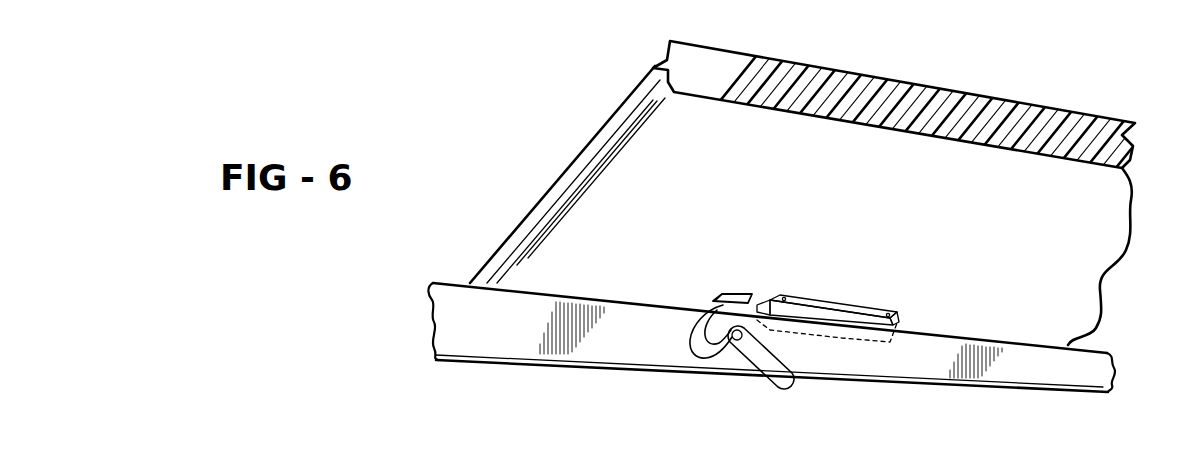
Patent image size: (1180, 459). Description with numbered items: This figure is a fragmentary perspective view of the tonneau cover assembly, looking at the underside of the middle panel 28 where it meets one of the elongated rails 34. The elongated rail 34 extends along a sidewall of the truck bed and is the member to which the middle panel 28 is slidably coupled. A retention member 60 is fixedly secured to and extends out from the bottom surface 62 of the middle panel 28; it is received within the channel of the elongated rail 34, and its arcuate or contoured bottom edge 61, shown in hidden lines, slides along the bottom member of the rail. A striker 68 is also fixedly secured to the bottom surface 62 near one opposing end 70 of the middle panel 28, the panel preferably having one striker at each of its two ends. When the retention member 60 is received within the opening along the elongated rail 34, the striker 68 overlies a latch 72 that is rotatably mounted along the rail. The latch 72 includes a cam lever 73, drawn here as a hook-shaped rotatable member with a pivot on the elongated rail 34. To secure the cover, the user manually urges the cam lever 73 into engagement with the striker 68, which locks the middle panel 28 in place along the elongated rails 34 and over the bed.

The middle panel 28 is at (585, 140).
The elongated rail 34 is at (888, 381).
The retention member 60 is at (860, 320).
The contoured bottom edge 61 is at (842, 338).
The bottom surface 62 is at (952, 225).
The striker 68 is at (738, 295).
The opposing end 70 is at (627, 292).
The latch 72 is at (773, 389).
The cam lever 73 is at (689, 320).